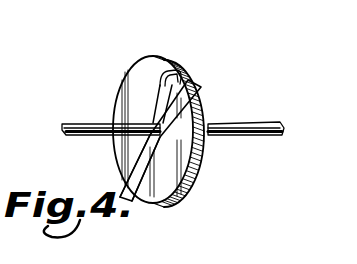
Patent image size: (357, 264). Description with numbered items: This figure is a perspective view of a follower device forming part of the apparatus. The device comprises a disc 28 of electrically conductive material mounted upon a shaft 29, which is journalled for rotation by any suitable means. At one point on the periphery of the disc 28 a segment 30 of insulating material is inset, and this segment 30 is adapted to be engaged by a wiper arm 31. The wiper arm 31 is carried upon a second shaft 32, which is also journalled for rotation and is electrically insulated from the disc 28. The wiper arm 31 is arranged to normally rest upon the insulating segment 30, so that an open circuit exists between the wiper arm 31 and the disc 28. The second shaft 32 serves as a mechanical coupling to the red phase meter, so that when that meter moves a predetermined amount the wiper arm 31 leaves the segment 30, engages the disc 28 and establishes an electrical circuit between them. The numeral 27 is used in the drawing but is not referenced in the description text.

The disc 27 is at (175, 52).
The disc 28 is at (162, 185).
The shaft 29 is at (242, 125).
The segment 30 is at (201, 84).
The wiper arm 31 is at (163, 92).
The second shaft 32 is at (82, 125).